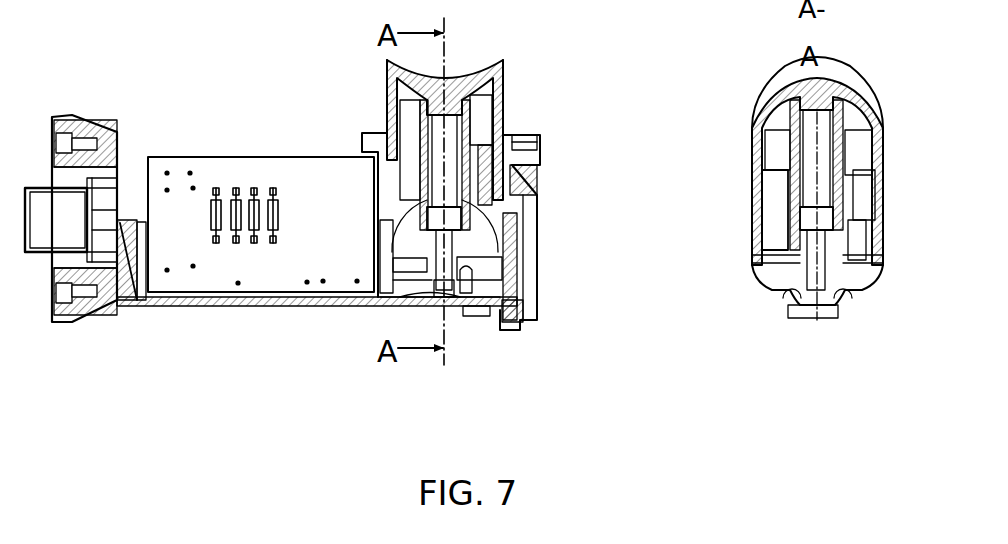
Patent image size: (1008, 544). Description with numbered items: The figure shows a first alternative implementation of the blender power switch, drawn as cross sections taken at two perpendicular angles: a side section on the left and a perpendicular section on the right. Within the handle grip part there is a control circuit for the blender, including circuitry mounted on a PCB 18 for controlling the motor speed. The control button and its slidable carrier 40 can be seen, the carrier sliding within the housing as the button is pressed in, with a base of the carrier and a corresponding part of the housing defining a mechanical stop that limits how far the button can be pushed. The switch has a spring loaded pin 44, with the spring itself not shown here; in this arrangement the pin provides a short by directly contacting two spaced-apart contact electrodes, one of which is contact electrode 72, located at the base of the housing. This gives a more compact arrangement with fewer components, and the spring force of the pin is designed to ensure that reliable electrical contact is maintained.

The PCB 18 is at (283, 157).
The slidable carrier 40 is at (505, 98).
The spring loaded pin 44 is at (812, 262).
The contact electrode 72 is at (850, 290).